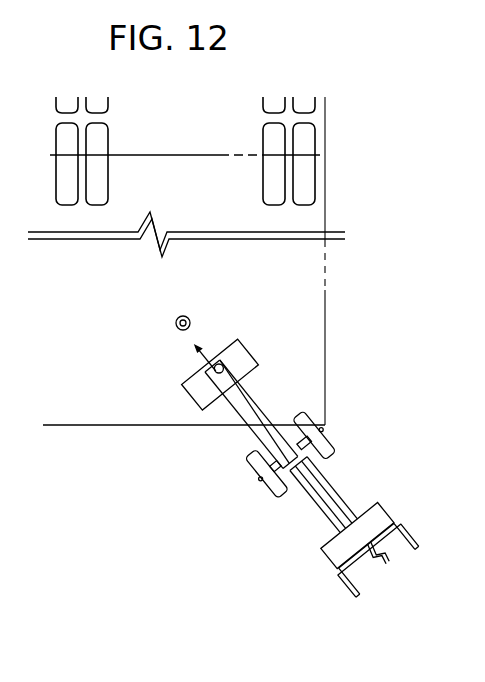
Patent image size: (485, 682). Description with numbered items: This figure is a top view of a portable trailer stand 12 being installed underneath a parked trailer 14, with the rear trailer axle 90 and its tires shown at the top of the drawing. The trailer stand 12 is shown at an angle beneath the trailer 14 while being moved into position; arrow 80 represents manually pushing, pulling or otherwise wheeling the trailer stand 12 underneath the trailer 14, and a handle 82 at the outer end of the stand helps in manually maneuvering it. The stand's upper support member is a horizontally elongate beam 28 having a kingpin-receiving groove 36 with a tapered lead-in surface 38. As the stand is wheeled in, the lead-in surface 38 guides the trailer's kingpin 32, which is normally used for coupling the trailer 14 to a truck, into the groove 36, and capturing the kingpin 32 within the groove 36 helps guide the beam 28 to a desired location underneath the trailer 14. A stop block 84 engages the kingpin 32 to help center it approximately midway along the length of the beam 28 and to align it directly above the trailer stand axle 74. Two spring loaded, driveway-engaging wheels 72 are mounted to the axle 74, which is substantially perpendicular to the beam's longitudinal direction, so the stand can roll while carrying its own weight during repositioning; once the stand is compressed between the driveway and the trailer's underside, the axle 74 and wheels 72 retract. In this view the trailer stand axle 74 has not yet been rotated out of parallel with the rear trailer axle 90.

The portable trailer stand 12 is at (205, 530).
The trailer 14 is at (325, 323).
The beam 28 is at (318, 522).
The kingpin 32 is at (178, 318).
The kingpin-receiving groove 36 is at (250, 405).
The tapered lead-in surface 38 is at (216, 362).
The wheels 72 is at (248, 481).
The trailer stand axle 74 is at (296, 488).
The arrow 80 is at (206, 361).
The handle 82 is at (349, 592).
The stop block 84 is at (283, 436).
The rear trailer axle 90 is at (182, 170).